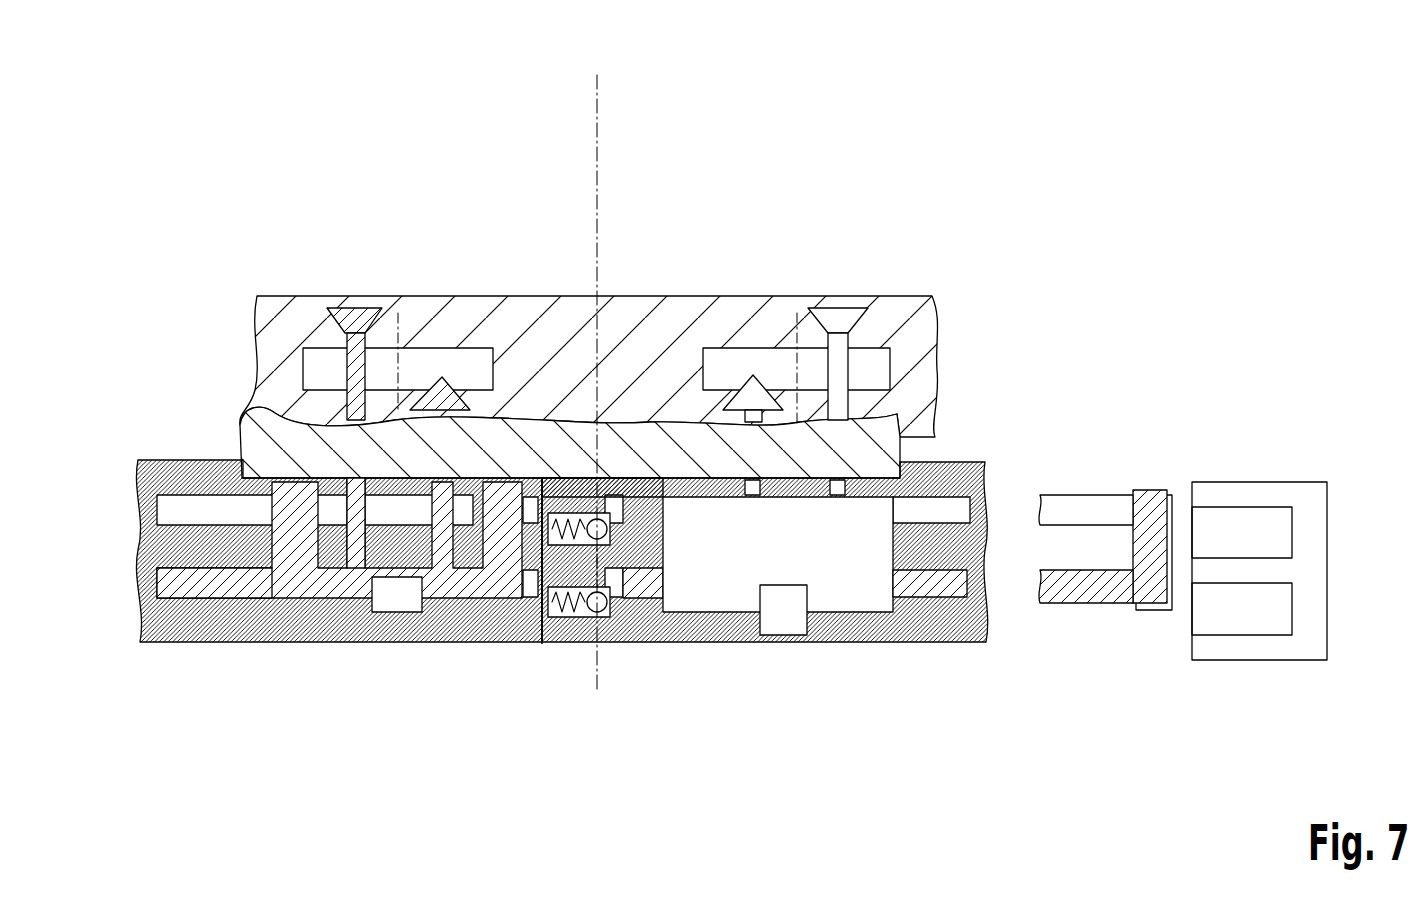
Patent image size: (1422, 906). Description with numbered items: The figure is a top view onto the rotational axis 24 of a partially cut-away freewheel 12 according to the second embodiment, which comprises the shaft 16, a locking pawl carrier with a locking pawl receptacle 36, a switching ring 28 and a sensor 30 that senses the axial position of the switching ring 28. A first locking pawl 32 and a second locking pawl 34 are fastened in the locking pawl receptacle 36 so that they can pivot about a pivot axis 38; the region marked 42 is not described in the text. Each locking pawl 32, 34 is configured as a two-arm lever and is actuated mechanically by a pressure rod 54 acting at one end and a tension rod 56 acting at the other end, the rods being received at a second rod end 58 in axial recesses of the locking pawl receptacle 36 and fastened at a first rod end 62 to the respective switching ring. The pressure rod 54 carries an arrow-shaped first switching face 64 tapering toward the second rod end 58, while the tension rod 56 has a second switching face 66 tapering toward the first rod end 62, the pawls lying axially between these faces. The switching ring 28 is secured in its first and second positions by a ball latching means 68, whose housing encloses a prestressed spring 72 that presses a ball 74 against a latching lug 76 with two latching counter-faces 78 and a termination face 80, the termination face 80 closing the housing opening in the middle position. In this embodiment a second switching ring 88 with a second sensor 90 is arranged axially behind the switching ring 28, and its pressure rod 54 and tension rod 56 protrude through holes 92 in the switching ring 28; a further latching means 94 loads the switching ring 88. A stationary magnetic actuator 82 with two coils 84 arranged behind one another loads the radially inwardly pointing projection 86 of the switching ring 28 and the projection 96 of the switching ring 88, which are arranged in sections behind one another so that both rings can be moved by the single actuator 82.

The freewheel 12 is at (1017, 205).
The shaft 16 is at (905, 315).
The rotational axis 24 is at (597, 91).
The switching ring 28 is at (848, 583).
The sensor 30 is at (790, 620).
The first locking pawl 32 is at (323, 368).
The second locking pawl 34 is at (748, 393).
The locking pawl receptacle 36 is at (900, 455).
The pivot axis 38 is at (797, 313).
The recess 42 is at (897, 368).
The pressure rod 54 is at (400, 345).
The tension rod 56 is at (363, 295).
The second rod end 58 is at (845, 312).
The first rod end 62 is at (930, 615).
The first switching face 64 is at (460, 380).
The second switching face 66 is at (325, 328).
The latching means 68 is at (612, 545).
The spring 72 is at (591, 551).
The ball 74 is at (562, 630).
The latching lug 76 is at (598, 518).
The latching counter-faces 78 is at (563, 513).
The termination face 80 is at (600, 500).
The magnetic actuator 82 is at (1291, 474).
The coils 84 is at (1242, 532).
The projection 86 is at (1090, 508).
The second switching ring 88 is at (175, 583).
The second sensor 90 is at (388, 610).
The holes 92 is at (340, 507).
The further latching means 94 is at (535, 605).
The projection 96 is at (1093, 593).